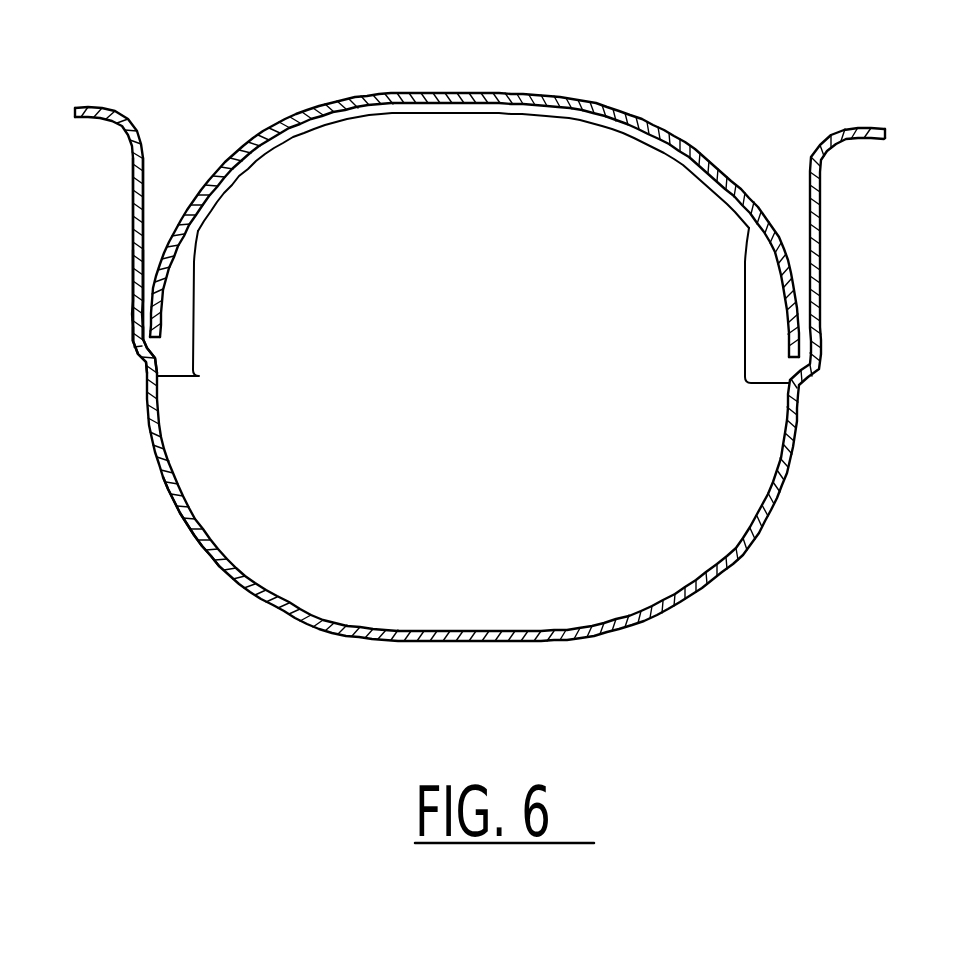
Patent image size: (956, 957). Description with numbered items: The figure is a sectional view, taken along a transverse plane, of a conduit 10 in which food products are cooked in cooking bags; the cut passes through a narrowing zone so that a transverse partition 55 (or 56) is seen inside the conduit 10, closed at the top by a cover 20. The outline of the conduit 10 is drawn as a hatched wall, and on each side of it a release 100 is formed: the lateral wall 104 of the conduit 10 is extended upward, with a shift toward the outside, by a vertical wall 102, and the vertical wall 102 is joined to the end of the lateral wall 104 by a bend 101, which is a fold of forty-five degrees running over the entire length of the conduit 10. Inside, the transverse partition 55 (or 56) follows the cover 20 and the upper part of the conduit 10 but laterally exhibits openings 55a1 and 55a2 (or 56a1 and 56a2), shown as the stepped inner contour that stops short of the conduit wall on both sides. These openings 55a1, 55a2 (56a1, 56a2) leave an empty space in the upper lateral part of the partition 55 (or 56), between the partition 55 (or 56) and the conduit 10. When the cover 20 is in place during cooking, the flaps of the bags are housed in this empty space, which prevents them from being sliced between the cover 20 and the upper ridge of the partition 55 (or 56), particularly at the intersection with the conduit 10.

The conduit 10 is at (406, 643).
The cover 20 is at (461, 94).
The release 100 is at (124, 308).
The bend 101 is at (145, 357).
The vertical wall 102 is at (133, 271).
The lateral wall 104 is at (195, 549).
The transverse partition 55 is at (424, 443).
The transverse partition 56 is at (471, 443).
The opening 55a1 is at (197, 290).
The opening 56a1 is at (246, 303).
The opening 55a2 is at (745, 263).
The opening 56a2 is at (710, 305).